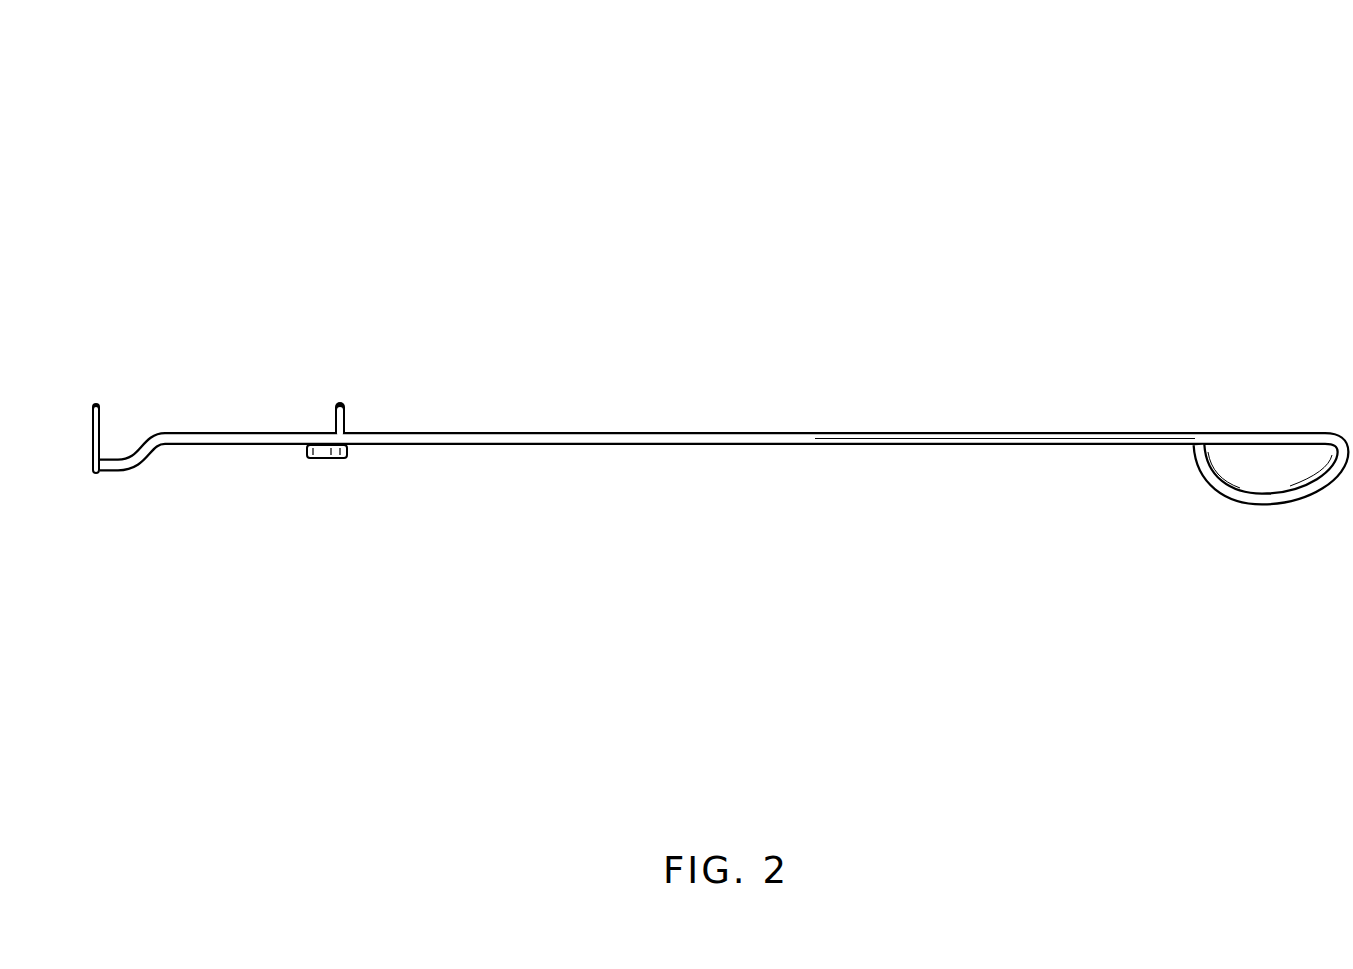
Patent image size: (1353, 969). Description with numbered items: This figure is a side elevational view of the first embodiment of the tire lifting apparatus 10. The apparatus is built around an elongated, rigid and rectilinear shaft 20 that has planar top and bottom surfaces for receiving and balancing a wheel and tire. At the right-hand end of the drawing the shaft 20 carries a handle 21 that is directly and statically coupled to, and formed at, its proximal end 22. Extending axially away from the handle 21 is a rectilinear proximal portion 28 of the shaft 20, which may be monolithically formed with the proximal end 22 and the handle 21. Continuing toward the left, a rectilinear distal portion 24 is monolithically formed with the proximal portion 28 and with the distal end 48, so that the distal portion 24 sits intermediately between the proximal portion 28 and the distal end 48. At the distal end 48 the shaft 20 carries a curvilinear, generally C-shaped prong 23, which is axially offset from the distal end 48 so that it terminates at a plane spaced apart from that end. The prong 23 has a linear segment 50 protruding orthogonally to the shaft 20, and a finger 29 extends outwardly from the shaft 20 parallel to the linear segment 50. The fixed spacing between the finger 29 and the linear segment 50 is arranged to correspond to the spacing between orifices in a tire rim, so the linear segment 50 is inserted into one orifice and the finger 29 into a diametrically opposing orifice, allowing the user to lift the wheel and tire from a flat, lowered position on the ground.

The tire lifting apparatus 10 is at (190, 150).
The shaft 20 is at (722, 425).
The handle 21 is at (1232, 490).
The proximal end 22 is at (1200, 440).
The prong 23 is at (107, 470).
The distal portion 24 is at (286, 440).
The proximal portion 28 is at (617, 437).
The finger 29 is at (347, 415).
The distal end 48 is at (197, 438).
The linear segment 50 is at (103, 430).